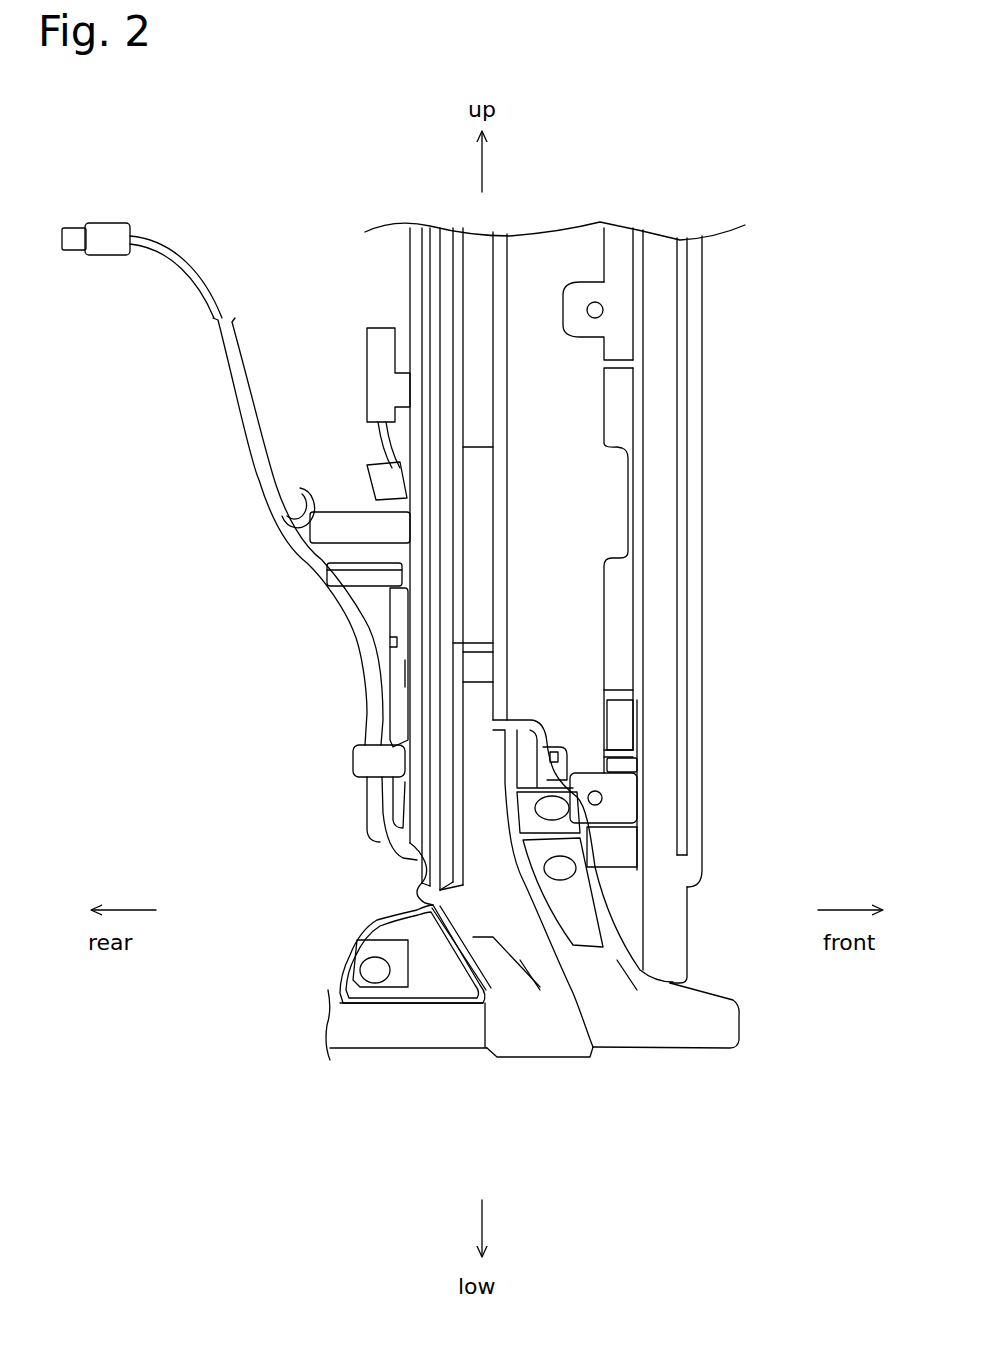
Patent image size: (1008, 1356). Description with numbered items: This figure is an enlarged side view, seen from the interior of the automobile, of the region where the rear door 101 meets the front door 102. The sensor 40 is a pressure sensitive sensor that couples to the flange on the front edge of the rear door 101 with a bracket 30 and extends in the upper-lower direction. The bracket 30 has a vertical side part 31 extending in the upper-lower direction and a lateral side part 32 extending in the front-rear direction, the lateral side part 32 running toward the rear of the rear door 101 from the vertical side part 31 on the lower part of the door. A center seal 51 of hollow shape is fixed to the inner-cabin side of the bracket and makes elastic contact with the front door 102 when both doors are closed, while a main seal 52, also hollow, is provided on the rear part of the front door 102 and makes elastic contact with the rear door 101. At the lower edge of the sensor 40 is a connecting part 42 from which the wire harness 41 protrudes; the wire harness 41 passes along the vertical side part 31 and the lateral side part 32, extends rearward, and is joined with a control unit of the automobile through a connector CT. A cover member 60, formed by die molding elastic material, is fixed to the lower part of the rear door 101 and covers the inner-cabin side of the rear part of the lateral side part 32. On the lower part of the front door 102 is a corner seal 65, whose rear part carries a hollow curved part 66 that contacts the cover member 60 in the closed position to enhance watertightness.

The connector CT is at (106, 225).
The wire harness 41 is at (255, 465).
The bracket 30 is at (580, 697).
The vertical side part 31 is at (600, 630).
The lateral side part 32 is at (615, 857).
The sensor 40 is at (695, 508).
The connecting part 42 is at (695, 867).
The center seal 51 is at (663, 417).
The main seal 52 is at (485, 497).
The cover member 60 is at (368, 920).
The corner seal 65 is at (595, 1008).
The curved part 66 is at (503, 997).
The rear door 101 is at (288, 995).
The front door 102 is at (772, 1010).